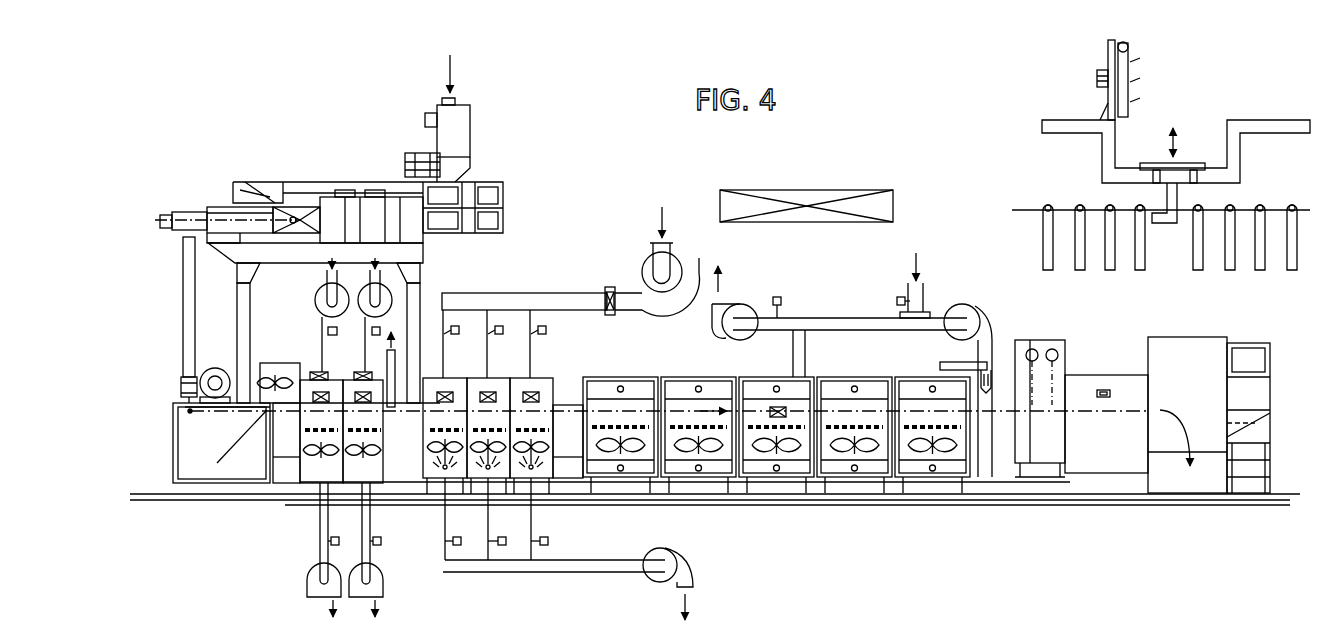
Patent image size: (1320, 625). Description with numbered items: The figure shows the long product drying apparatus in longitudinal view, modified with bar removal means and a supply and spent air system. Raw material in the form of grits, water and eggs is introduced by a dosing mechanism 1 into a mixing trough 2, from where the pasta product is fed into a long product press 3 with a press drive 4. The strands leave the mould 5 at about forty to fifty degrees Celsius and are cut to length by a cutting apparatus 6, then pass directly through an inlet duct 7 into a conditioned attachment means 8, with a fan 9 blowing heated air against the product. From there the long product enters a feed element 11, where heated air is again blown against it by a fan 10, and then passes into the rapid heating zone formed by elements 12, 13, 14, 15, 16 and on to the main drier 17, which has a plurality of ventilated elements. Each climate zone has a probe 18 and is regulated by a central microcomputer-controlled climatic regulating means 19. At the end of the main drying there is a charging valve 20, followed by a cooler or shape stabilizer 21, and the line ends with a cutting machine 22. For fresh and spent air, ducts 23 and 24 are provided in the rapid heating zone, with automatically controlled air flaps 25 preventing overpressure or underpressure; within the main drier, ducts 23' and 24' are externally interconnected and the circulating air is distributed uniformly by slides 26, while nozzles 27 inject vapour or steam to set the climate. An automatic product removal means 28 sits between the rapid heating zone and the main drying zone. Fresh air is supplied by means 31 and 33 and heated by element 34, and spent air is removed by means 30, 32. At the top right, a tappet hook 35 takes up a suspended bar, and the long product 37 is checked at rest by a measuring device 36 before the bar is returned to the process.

The dosing mechanism 1 is at (465, 123).
The mixing trough 2 is at (342, 190).
The long product press 3 is at (240, 208).
The press drive 4 is at (373, 212).
The mould 5 is at (183, 248).
The cutting apparatus 6 is at (183, 368).
The inlet duct 7 is at (183, 378).
The attachment means 8 is at (215, 452).
The fan 9 is at (187, 408).
The fan 10 is at (267, 380).
The feed element 11 is at (287, 455).
The rapid heating zone element 12 is at (313, 470).
The rapid heating zone element 13 is at (355, 478).
The rapid heating zone element 14 is at (455, 470).
The rapid heating zone element 15 is at (498, 470).
The rapid heating zone element 16 is at (520, 470).
The main drier 17 is at (790, 455).
The sensor 18 is at (538, 396).
The climatic regulating means 19 is at (883, 200).
The charging valve 20 is at (1017, 450).
The cooler or shape stabilizer 21 is at (1097, 463).
The cutting machine 22 is at (1213, 483).
The duct 23 is at (568, 549).
The duct 23' is at (863, 415).
The duct 24 is at (653, 261).
The duct 24' is at (937, 394).
The air flap 25 is at (498, 328).
The slide 26 is at (780, 383).
The nozzle 27 is at (987, 363).
The automatic product removal means 28 is at (425, 380).
The spent air removal means 30 is at (322, 589).
The fresh air supply means 31 is at (322, 304).
The spent air removal means 32 is at (373, 587).
The fresh air supply means 33 is at (370, 300).
The heating element 34 is at (357, 372).
The tappet hook 35 is at (1180, 177).
The measuring device 36 is at (1097, 80).
The long product 37 is at (1133, 60).